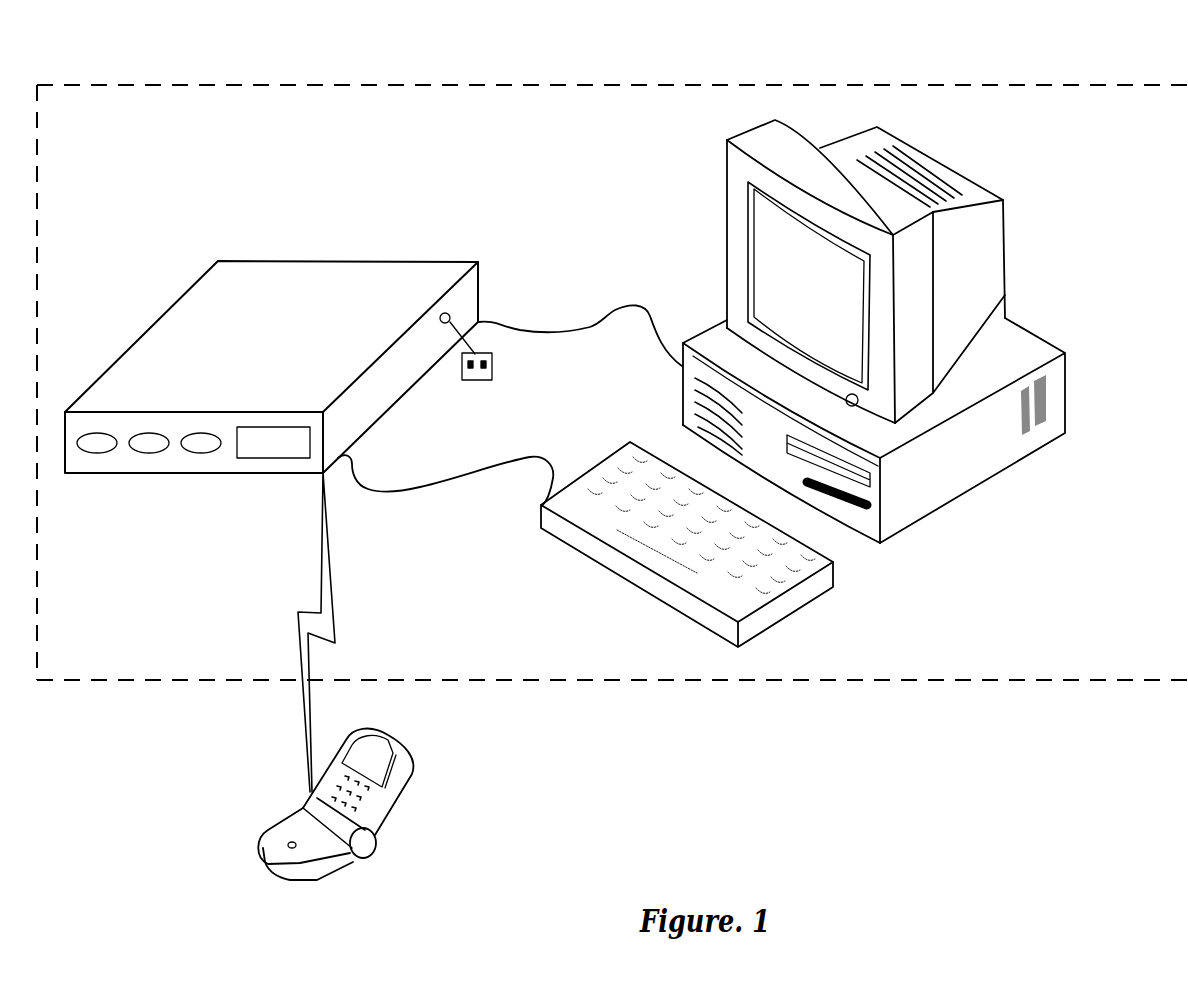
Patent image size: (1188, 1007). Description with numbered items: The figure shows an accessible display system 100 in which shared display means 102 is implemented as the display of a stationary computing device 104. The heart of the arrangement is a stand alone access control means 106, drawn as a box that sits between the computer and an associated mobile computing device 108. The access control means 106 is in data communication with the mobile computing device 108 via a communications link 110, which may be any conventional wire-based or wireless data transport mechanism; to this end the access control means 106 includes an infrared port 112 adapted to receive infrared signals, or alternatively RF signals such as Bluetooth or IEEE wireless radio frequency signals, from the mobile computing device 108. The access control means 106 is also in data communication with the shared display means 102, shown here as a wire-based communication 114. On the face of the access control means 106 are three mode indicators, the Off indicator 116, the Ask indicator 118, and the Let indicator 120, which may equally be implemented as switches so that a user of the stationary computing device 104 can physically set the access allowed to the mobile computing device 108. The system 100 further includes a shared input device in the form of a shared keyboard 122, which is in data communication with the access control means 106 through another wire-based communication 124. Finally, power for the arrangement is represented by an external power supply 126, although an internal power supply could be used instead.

The accessible display system 100 is at (328, 83).
The shared display means 102 is at (740, 186).
The stationary computing device 104 is at (1073, 392).
The stand alone access control means 106 is at (293, 260).
The associated mobile computing device 108 is at (407, 780).
The communications link 110 is at (335, 640).
The infrared port 112 is at (287, 458).
The wire-based communication 114 is at (561, 320).
The Off indicator 116 is at (92, 453).
The Ask indicator 118 is at (148, 453).
The Let indicator 120 is at (202, 453).
The shared keyboard 122 is at (653, 584).
The wire-based communication 124 is at (387, 493).
The external power supply 126 is at (477, 380).